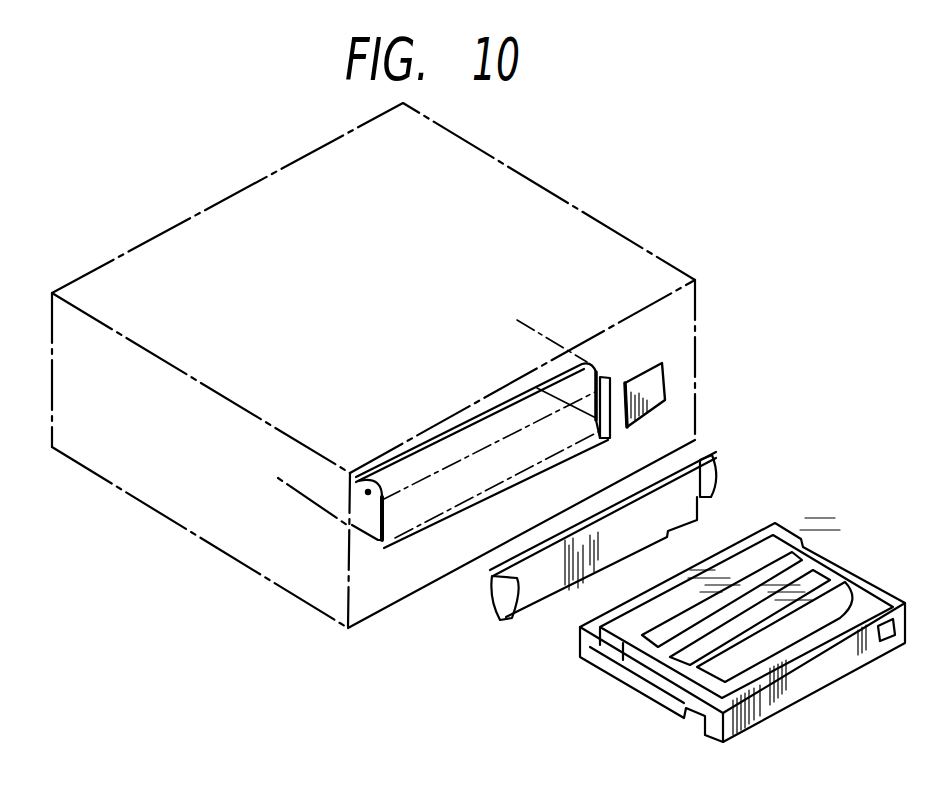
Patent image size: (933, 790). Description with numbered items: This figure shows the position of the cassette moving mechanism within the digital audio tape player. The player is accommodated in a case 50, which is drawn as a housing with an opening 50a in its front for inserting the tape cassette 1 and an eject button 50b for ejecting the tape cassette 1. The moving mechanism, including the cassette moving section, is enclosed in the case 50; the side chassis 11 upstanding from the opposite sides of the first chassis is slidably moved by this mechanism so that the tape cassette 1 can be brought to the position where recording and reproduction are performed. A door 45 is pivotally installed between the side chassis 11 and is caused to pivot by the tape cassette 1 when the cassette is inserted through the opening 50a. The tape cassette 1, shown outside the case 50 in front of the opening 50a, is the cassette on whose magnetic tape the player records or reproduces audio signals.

The tape cassette 1 is at (833, 548).
The side chassis 11 is at (323, 500).
The door 45 is at (527, 616).
The case 50 is at (556, 212).
The opening 50a is at (407, 540).
The eject button 50b is at (665, 393).